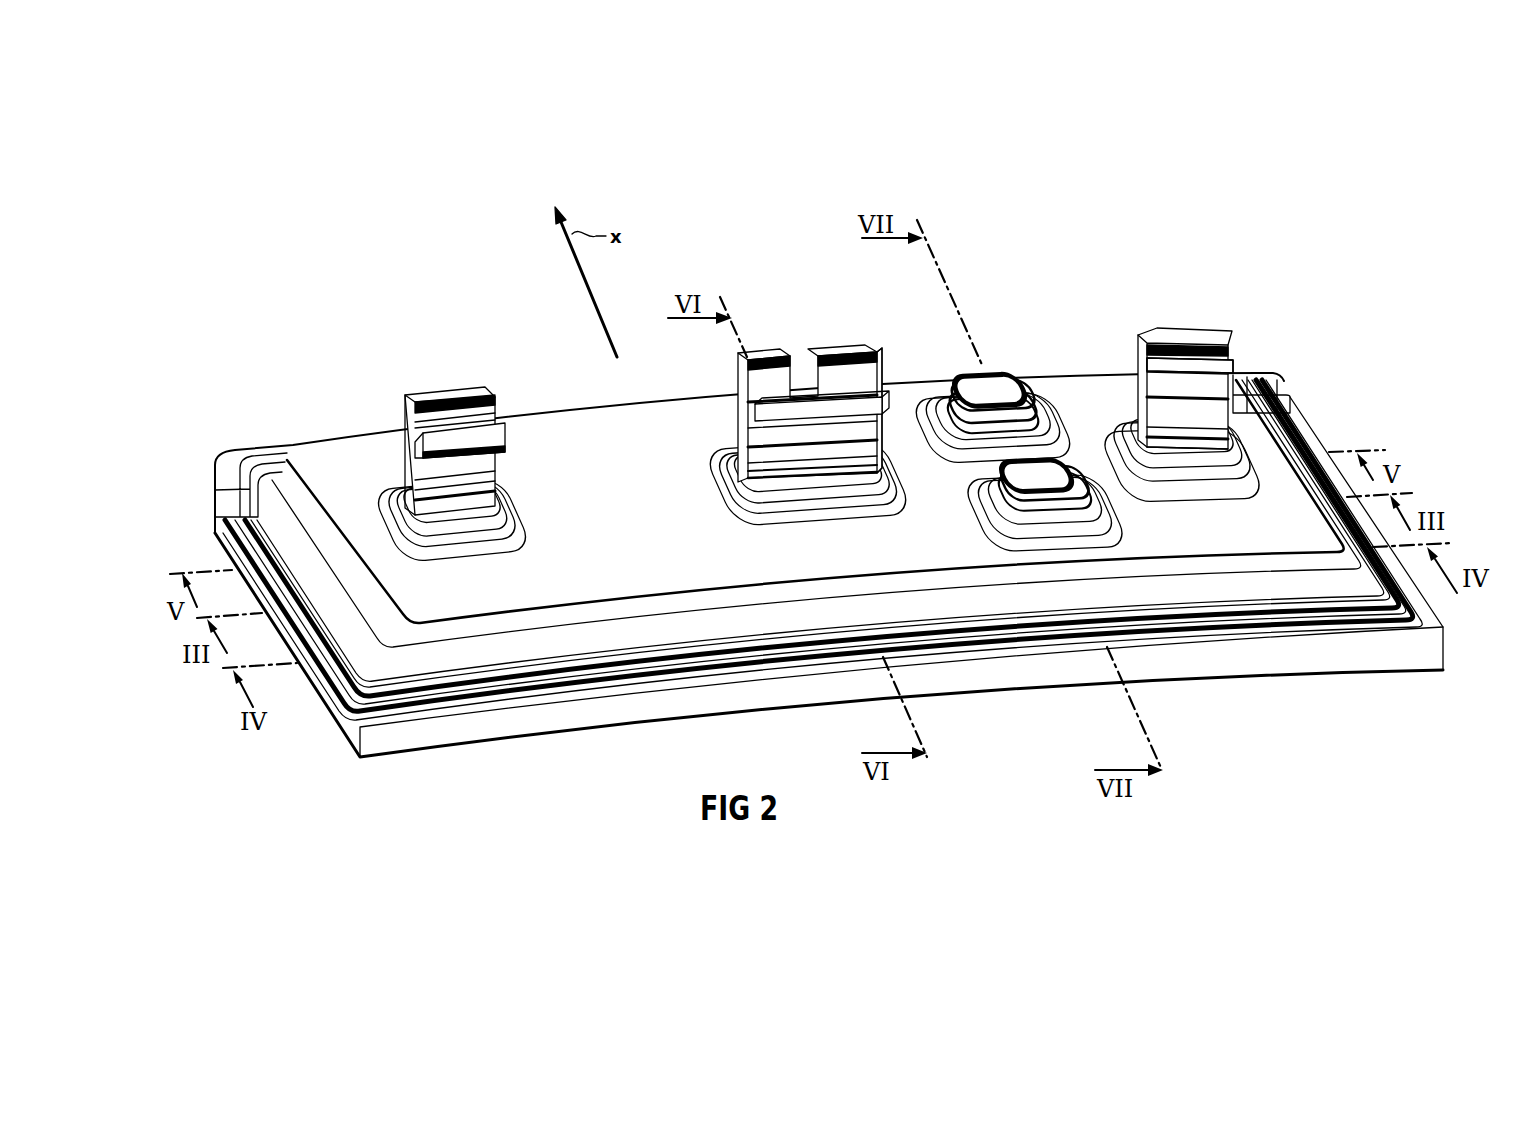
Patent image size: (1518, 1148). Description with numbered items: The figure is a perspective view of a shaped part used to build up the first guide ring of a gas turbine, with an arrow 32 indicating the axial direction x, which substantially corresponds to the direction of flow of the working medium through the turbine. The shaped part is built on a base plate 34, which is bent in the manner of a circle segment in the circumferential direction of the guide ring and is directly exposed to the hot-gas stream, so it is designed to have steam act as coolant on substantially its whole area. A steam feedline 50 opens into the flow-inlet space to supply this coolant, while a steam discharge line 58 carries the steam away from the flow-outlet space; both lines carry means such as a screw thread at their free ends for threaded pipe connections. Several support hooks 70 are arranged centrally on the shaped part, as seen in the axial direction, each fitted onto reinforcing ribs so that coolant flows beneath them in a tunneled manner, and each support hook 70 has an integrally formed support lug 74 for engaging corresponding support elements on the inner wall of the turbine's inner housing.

The arrow 32 is at (594, 300).
The base plate 34 is at (440, 732).
The steam feedline 50 is at (1000, 388).
The steam discharge line 58 is at (1033, 477).
The support hook 70 is at (422, 392).
The support lug 74 is at (492, 445).